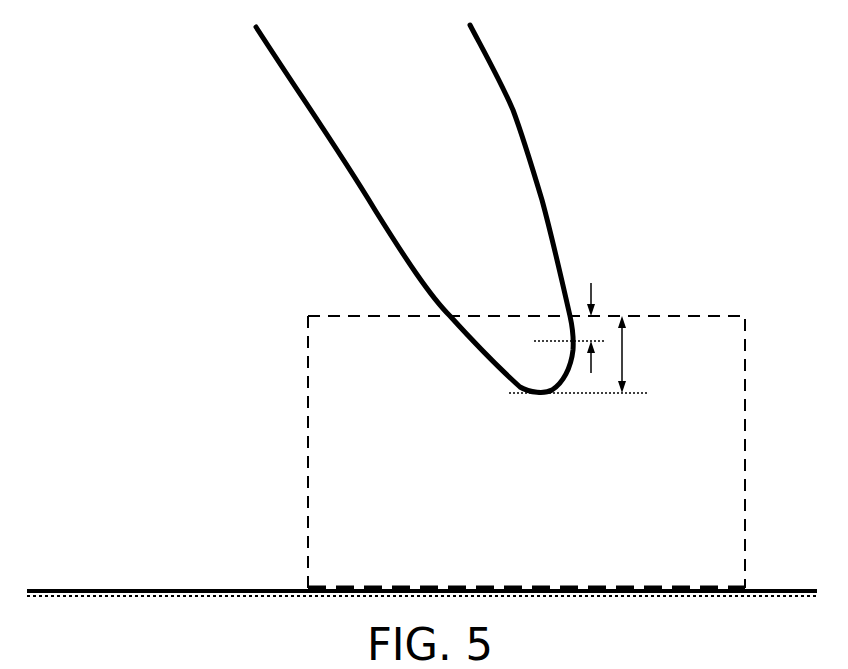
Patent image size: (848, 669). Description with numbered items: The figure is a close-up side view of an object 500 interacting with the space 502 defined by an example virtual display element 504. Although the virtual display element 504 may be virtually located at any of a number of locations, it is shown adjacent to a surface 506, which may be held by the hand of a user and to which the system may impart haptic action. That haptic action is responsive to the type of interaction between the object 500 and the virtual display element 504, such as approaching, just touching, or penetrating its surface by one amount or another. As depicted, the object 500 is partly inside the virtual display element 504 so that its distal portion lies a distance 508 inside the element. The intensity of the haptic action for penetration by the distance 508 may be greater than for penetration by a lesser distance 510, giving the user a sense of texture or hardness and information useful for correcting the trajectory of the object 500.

The object 500 is at (513, 110).
The space 502 is at (406, 554).
The virtual display element 504 is at (340, 316).
The surface 506 is at (185, 590).
The distance 508 is at (587, 354).
The lesser distance 510 is at (591, 288).